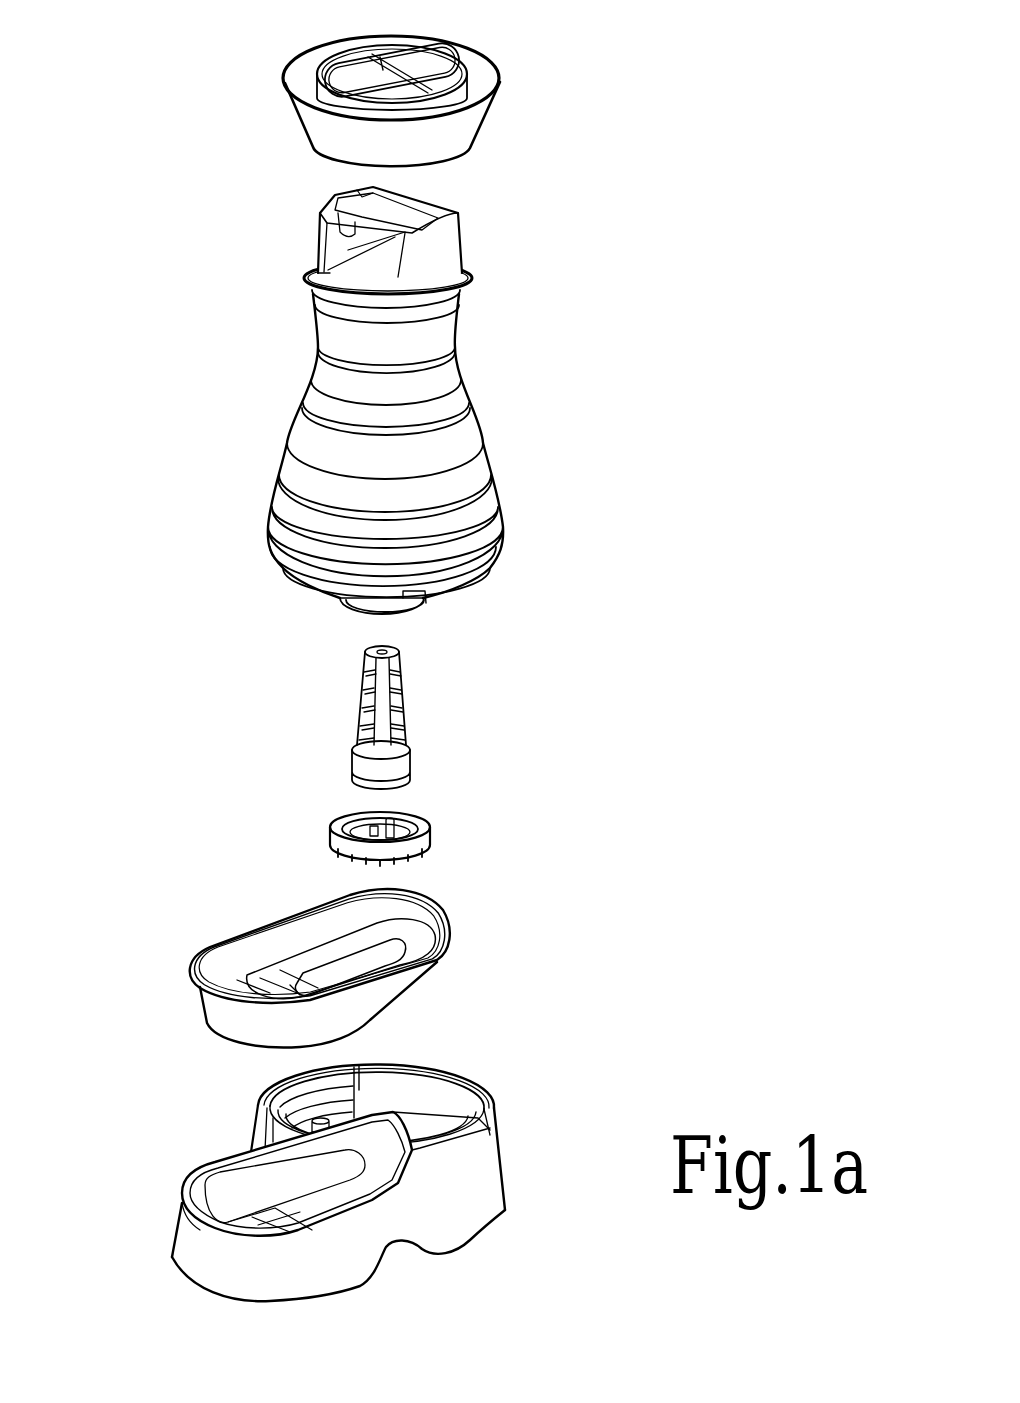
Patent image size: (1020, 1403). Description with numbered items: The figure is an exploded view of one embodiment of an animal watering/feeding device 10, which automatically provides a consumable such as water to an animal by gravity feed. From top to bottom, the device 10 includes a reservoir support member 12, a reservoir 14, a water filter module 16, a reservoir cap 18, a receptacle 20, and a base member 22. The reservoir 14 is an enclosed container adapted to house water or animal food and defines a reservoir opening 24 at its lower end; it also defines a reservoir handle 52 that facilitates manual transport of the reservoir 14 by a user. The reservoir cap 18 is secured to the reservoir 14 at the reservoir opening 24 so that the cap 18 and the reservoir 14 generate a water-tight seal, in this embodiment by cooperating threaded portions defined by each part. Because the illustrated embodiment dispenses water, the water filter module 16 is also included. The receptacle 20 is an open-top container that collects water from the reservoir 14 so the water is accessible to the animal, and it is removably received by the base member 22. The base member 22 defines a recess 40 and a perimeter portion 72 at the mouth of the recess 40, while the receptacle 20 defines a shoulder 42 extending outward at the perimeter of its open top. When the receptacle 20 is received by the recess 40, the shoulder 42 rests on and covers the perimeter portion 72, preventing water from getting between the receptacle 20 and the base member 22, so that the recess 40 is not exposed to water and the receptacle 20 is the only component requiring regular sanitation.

The animal watering/feeding device 10 is at (140, 211).
The reservoir support member 12 is at (497, 83).
The reservoir handle 52 is at (450, 252).
The reservoir 14 is at (457, 343).
The reservoir opening 24 is at (380, 612).
The water filter module 16 is at (405, 695).
The reservoir cap 18 is at (415, 815).
The receptacle 20 is at (425, 930).
The shoulder 42 is at (190, 965).
The base member 22 is at (450, 1077).
The recess 40 is at (237, 1192).
The perimeter portion 72 is at (185, 1205).